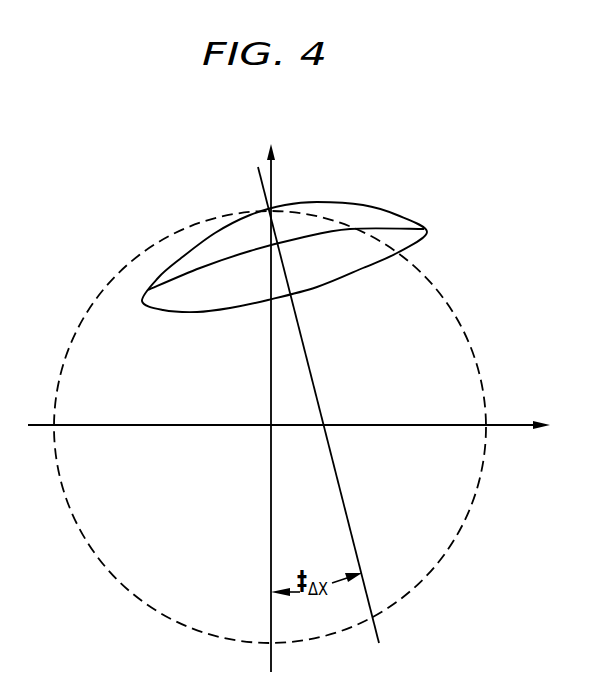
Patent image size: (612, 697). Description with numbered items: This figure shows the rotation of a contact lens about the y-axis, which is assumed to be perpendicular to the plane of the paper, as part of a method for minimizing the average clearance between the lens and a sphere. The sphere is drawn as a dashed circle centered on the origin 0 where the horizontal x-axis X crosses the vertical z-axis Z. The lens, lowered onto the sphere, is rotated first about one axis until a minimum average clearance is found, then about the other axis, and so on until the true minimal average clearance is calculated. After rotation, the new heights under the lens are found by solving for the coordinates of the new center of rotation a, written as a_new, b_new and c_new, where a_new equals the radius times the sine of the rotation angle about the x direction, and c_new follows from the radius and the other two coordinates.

The x-axis X is at (298, 428).
The z-axis Z is at (269, 393).
The origin 0 is at (239, 442).
The new center of rotation coordinates a is at (310, 305).